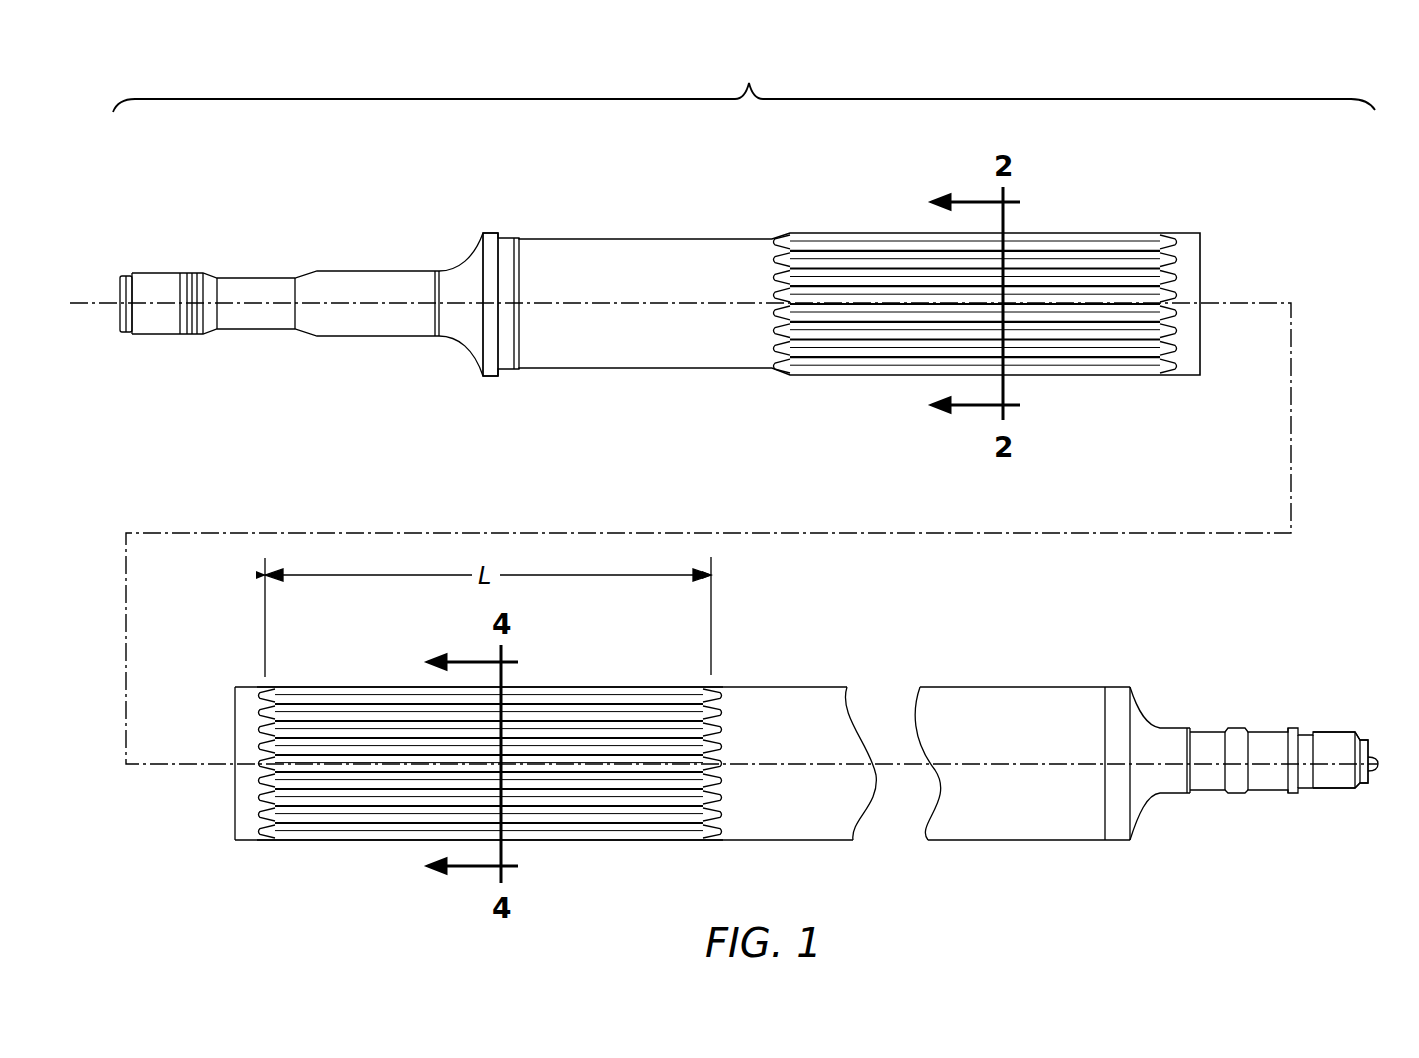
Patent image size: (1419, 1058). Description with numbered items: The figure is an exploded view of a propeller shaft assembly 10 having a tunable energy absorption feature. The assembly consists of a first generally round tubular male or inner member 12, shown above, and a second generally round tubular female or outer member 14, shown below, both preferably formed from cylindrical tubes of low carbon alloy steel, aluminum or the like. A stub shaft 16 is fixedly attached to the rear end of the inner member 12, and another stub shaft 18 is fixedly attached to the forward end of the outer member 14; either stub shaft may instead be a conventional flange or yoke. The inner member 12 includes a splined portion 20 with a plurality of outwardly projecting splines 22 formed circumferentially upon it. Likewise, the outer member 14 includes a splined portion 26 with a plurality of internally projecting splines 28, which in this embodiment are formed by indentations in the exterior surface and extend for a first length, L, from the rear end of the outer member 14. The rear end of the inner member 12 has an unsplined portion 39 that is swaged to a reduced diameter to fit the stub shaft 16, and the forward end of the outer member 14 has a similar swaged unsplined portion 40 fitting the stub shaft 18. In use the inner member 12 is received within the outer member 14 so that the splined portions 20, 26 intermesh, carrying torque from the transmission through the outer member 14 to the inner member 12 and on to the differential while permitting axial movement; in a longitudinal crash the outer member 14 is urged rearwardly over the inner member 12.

The propeller shaft assembly 10 is at (744, 86).
The inner member 12 is at (290, 205).
The outer member 14 is at (1288, 663).
The stub shaft 16 is at (158, 266).
The stub shaft 18 is at (1337, 727).
The splined portion 20 is at (1097, 273).
The splines 22 is at (907, 262).
The splined portion 26 is at (402, 700).
The splines 28 is at (563, 705).
The unsplined portion 39 is at (542, 222).
The unsplined portion 40 is at (803, 668).